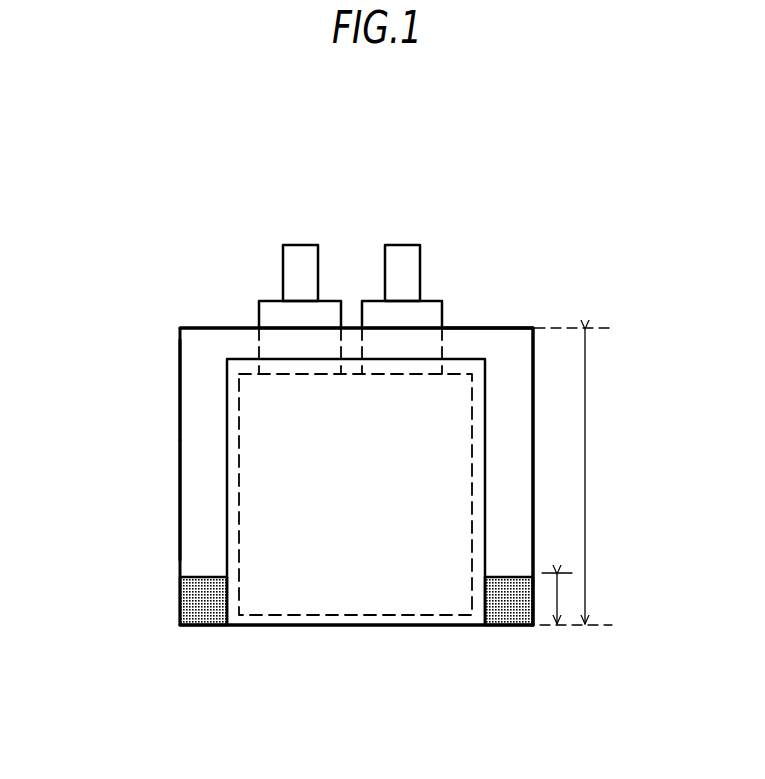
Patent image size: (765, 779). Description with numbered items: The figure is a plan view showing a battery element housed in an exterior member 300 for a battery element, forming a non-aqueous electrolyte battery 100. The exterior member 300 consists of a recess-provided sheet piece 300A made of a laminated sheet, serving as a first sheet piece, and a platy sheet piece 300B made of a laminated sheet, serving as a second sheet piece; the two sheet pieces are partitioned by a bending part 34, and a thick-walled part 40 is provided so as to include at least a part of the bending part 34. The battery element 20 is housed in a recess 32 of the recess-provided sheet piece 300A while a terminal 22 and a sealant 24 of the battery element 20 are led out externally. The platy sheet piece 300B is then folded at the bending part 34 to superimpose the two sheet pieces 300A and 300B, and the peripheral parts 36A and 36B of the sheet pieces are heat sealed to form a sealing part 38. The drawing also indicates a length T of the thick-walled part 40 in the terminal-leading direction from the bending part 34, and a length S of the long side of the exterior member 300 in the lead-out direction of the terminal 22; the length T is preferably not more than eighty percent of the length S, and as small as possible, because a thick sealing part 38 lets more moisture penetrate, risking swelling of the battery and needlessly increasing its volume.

The non-aqueous electrolyte battery 100 is at (416, 178).
The terminal 22 is at (390, 258).
The sealant 24 is at (270, 313).
The peripheral part of the recess-provided sheet piece 36A is at (503, 342).
The peripheral part of the platy sheet piece 36B is at (480, 335).
The sealing part 38 is at (510, 403).
The exterior member for a battery element 300 is at (178, 555).
The recess-provided sheet piece 300A is at (190, 488).
The platy sheet piece 300B is at (190, 440).
The battery element 20 is at (445, 504).
The recess 32 is at (403, 597).
The bending part 34 is at (258, 626).
The thick-walled part 40 is at (511, 617).
The length of the long side of the exterior member S is at (585, 452).
The length of the thick-walled part T is at (557, 608).